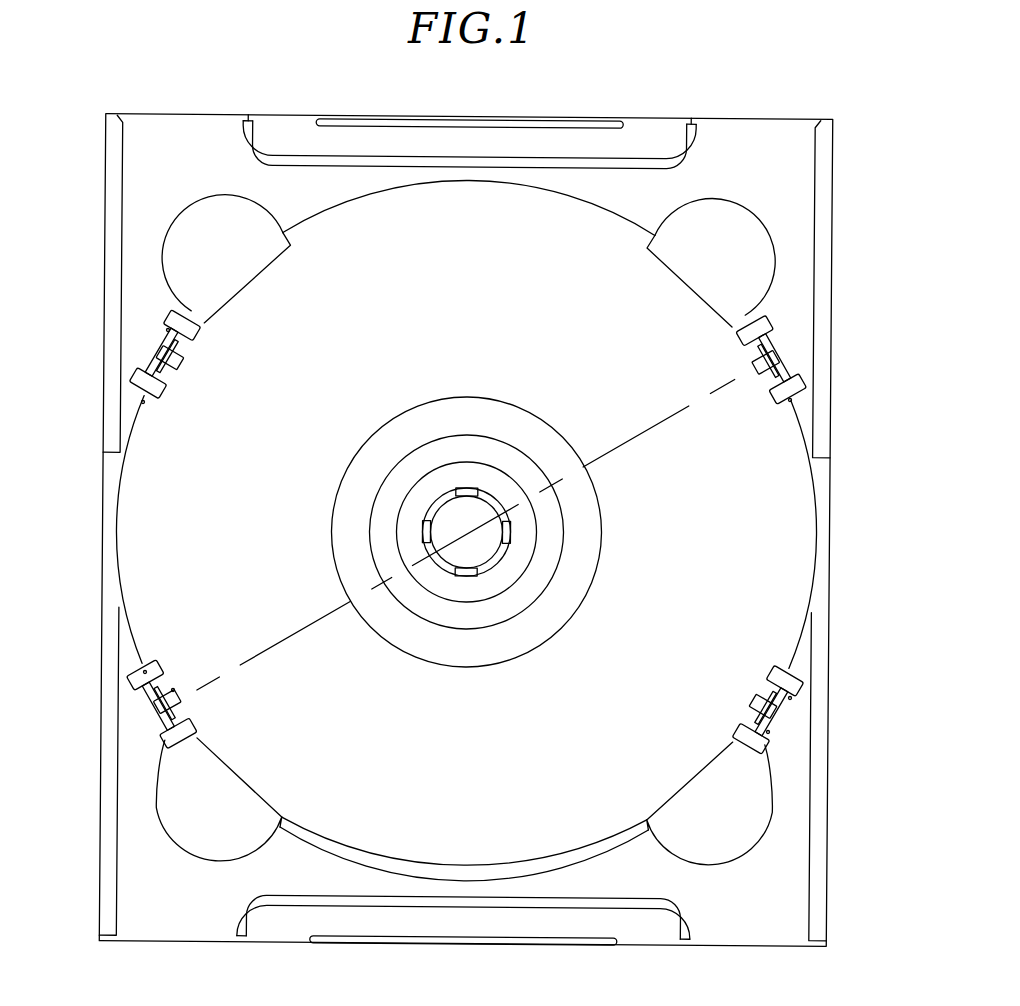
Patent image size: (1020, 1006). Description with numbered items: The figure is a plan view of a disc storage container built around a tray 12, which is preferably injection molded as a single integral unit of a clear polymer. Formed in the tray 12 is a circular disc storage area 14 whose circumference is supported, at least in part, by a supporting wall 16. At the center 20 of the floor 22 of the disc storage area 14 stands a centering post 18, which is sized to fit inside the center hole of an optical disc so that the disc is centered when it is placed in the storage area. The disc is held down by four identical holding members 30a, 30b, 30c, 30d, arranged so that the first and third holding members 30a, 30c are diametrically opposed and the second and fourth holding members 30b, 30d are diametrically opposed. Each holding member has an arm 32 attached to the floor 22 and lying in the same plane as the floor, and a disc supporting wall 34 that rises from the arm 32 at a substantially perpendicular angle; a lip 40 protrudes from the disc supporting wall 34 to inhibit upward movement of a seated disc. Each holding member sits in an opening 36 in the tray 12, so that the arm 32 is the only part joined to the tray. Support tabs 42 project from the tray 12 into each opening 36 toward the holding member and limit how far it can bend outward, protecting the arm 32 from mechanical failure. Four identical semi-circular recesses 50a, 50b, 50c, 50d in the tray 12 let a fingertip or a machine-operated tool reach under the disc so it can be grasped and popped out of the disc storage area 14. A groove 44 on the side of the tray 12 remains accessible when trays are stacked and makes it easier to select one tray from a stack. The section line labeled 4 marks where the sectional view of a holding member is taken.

The section line 4- 4 is at (810, 325).
The tray 12 is at (135, 240).
The disc storage area 14 is at (205, 518).
The supporting wall 16 is at (337, 205).
The centering post 18 is at (505, 528).
The center 20 is at (470, 535).
The floor 22 is at (468, 731).
The first holding member 30a is at (150, 372).
The second holding member 30b is at (800, 382).
The third holding member 30c is at (792, 672).
The fourth holding member 30d is at (150, 745).
The arm 32 is at (195, 358).
The disc supporting wall 34 is at (183, 368).
The opening 36 is at (142, 402).
The lip 40 is at (173, 690).
The support tab 42 is at (168, 330).
The groove 44 is at (512, 140).
The recess 50a is at (185, 268).
The recess 50b is at (748, 228).
The recess 50c is at (745, 825).
The recess 50d is at (190, 812).